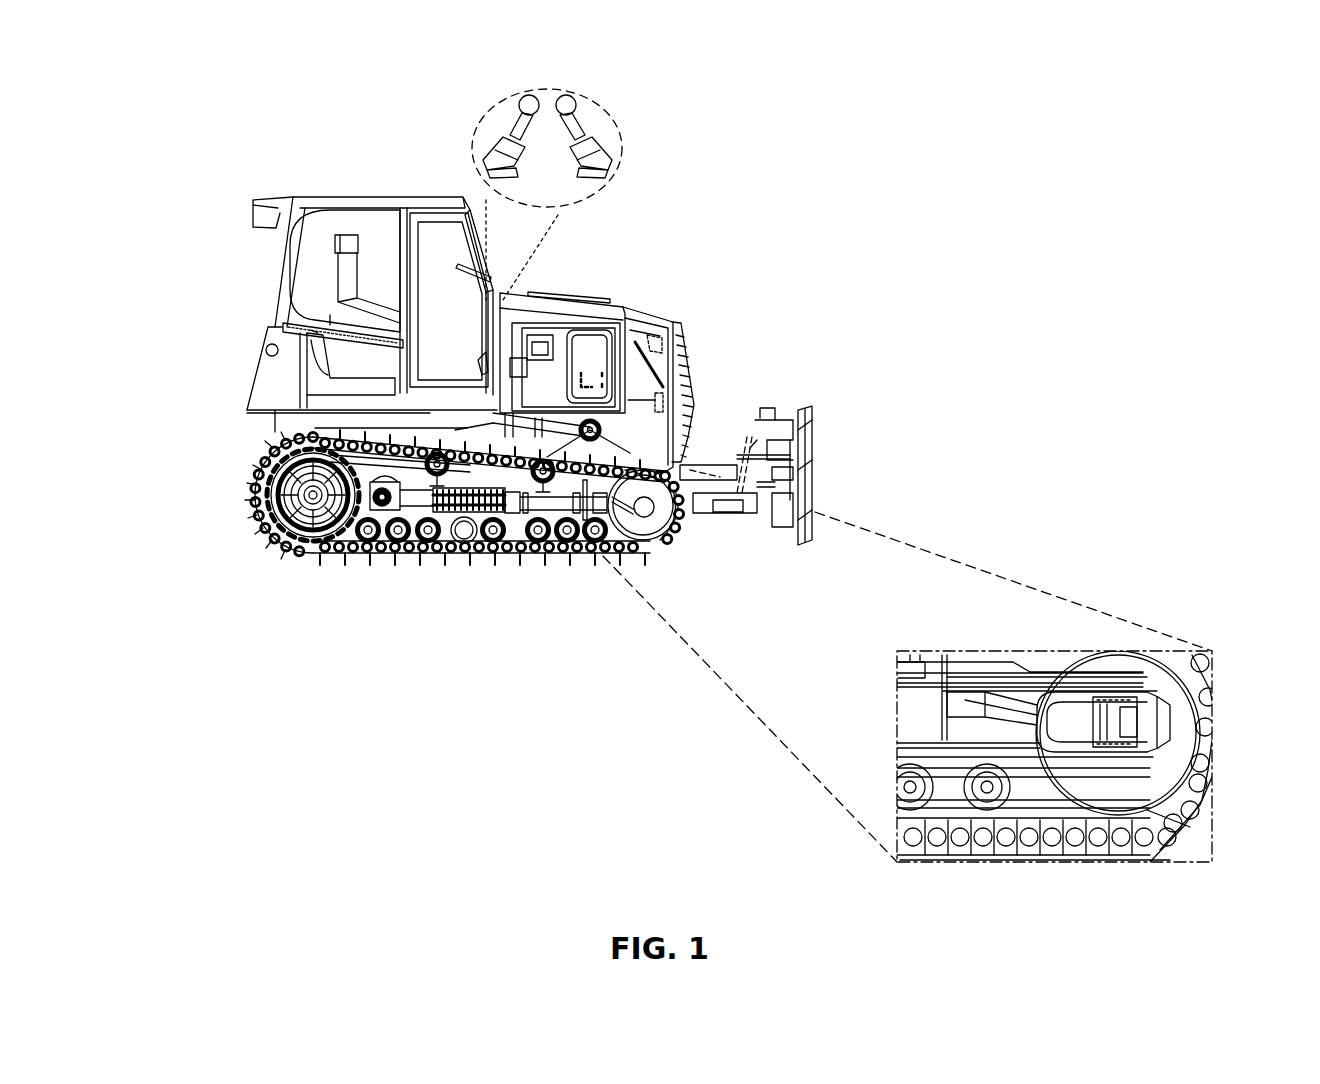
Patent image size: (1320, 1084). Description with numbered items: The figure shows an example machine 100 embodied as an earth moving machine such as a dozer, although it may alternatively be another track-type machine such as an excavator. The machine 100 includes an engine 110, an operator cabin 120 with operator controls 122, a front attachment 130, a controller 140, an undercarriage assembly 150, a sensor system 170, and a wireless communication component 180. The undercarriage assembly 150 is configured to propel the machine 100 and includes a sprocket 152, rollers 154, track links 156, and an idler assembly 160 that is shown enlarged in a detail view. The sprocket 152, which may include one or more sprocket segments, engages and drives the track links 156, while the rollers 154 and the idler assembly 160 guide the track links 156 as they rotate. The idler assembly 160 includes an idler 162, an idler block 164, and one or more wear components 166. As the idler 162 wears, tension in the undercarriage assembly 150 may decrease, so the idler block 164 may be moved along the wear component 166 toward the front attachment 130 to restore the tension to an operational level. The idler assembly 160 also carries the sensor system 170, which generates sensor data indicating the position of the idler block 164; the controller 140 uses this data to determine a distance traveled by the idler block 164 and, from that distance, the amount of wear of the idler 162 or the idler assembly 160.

The machine 100 is at (168, 66).
The engine 110 is at (558, 322).
The operator cabin 120 is at (331, 206).
The operator controls 122 is at (510, 92).
The front attachment 130 is at (799, 410).
The controller 140 is at (596, 350).
The undercarriage assembly 150 is at (520, 593).
The sprocket 152 is at (270, 538).
The rollers 154 is at (390, 560).
The track links 156 is at (460, 556).
The idler assembly 160 is at (926, 612).
The idler 162 is at (1102, 652).
The idler block 164 is at (1127, 728).
The wear component 166 is at (1152, 715).
The sensor system 170 is at (1177, 800).
The wireless communication component 180 is at (683, 388).